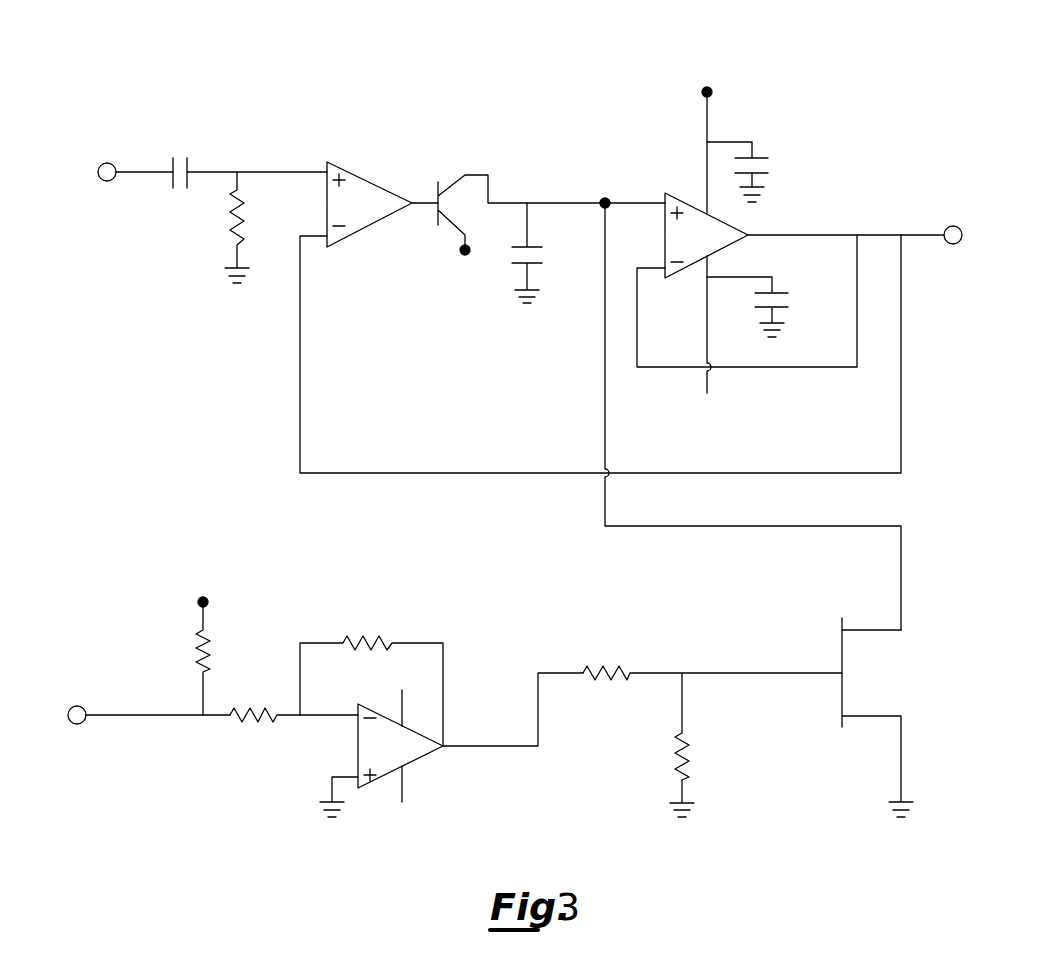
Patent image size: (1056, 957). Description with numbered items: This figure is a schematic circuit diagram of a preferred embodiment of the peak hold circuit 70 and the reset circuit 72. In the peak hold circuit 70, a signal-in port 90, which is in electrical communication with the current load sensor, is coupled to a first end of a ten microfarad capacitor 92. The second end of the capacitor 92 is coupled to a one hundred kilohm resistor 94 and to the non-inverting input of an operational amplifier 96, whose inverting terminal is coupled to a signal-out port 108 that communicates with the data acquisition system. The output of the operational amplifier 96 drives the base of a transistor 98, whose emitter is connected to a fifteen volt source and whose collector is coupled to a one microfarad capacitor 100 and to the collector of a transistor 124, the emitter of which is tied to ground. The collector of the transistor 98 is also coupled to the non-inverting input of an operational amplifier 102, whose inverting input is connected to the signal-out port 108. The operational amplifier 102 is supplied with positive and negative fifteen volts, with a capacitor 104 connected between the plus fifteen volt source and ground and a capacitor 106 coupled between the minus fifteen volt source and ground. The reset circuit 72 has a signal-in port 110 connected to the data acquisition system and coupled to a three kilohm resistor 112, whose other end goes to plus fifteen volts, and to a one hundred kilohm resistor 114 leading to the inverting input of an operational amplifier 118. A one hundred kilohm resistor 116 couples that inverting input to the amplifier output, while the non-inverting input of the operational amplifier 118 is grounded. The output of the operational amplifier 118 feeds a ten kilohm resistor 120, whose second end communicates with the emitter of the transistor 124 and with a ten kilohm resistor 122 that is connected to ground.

The peak hold circuit 70 is at (459, 103).
The reset circuit 72 is at (146, 602).
The signal-in port 90 is at (104, 182).
The capacitor 92 is at (190, 161).
The resistor 94 is at (247, 214).
The operational amplifier 96 is at (367, 160).
The transistor 98 is at (499, 175).
The capacitor 100 is at (533, 247).
The operational amplifier 102 is at (676, 180).
The capacitor 104 is at (755, 155).
The capacitor 106 is at (777, 290).
The signal-out port 108 is at (958, 226).
The signal-in port 110 is at (72, 726).
The resistor 112 is at (196, 658).
The resistor 114 is at (243, 726).
The resistor 116 is at (338, 630).
The operational amplifier 118 is at (438, 771).
The resistor 120 is at (596, 686).
The resistor 122 is at (672, 762).
The transistor 124 is at (925, 629).